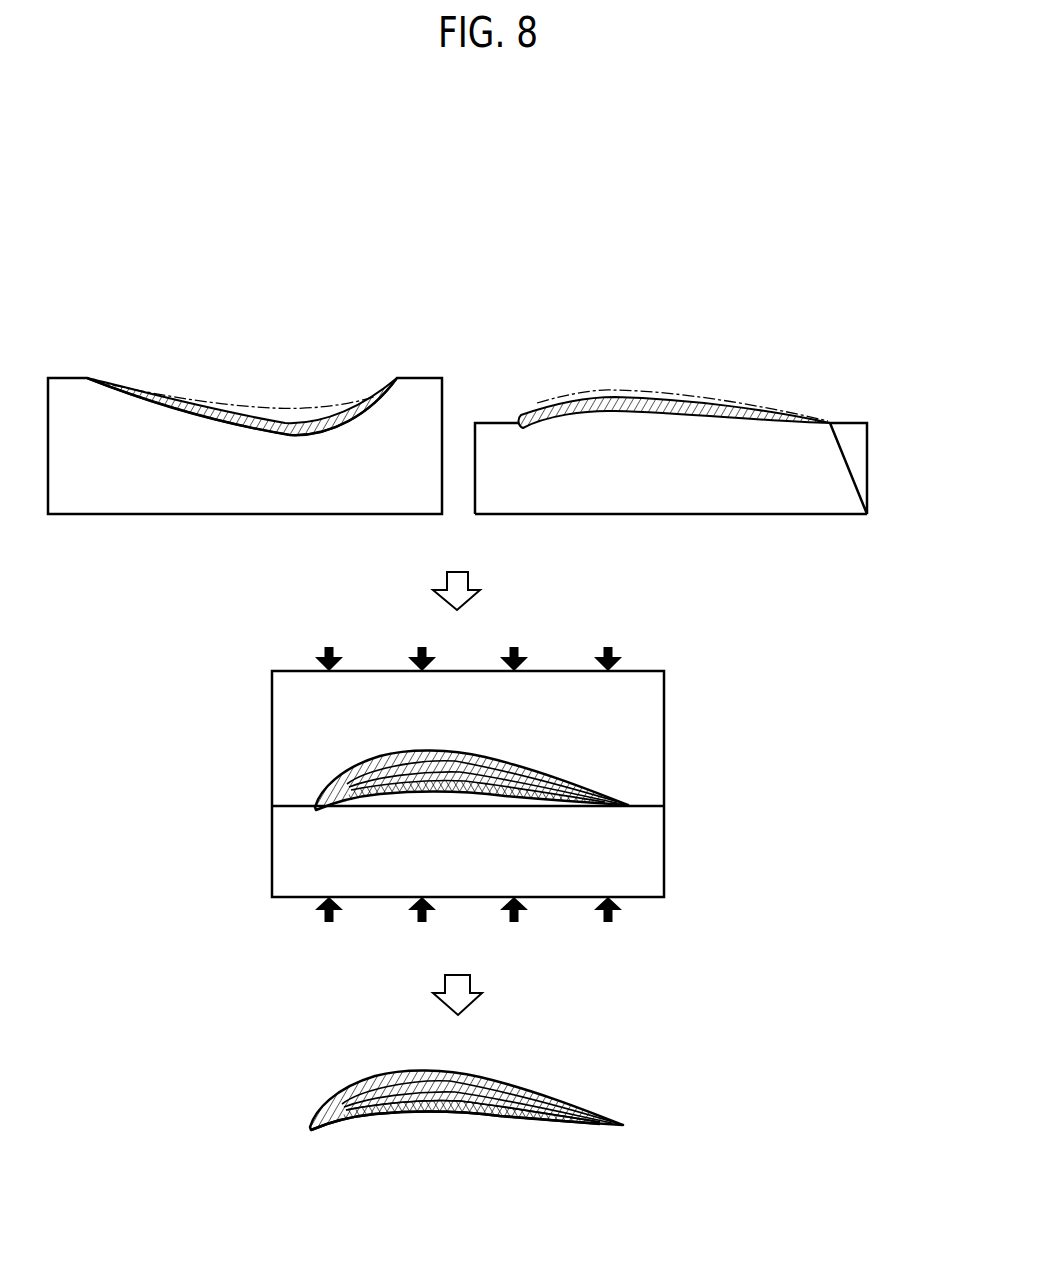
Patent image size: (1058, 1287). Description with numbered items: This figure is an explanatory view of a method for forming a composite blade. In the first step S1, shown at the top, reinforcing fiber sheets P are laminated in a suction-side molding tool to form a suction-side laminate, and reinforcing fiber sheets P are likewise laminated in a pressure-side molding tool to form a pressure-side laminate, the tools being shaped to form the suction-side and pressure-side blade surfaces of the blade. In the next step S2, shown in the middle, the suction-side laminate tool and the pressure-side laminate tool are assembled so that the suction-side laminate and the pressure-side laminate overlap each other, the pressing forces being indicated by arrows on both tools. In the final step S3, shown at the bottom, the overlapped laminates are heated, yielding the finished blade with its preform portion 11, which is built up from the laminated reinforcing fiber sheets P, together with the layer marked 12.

The reinforcing fiber sheets P is at (192, 400).
The step of forming laminates S1 is at (876, 404).
The step of assembling laminate tools S2 is at (673, 685).
The step of heating S3 is at (672, 1046).
The preform portion 11 is at (372, 1096).
The lower layer of blade 12 is at (493, 1112).